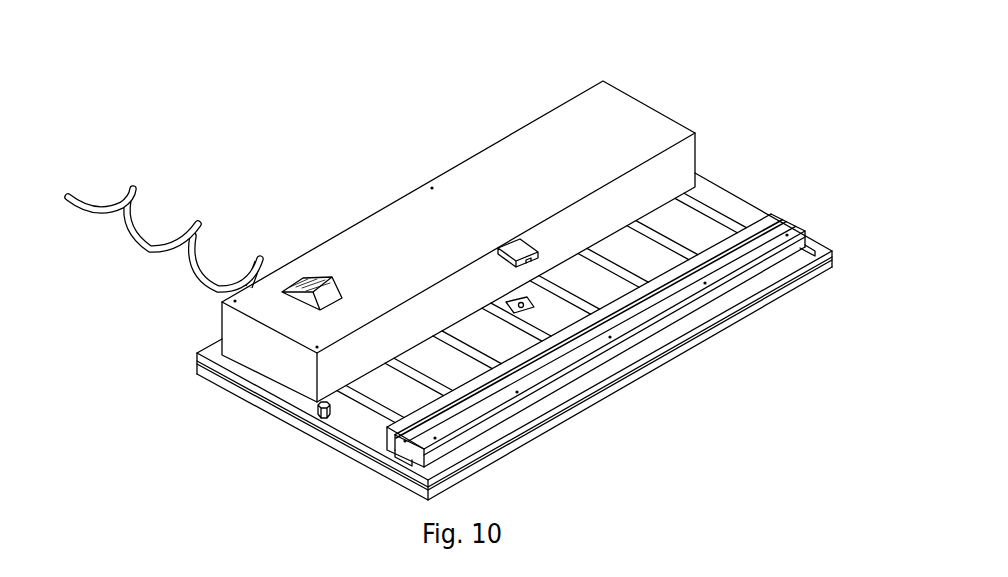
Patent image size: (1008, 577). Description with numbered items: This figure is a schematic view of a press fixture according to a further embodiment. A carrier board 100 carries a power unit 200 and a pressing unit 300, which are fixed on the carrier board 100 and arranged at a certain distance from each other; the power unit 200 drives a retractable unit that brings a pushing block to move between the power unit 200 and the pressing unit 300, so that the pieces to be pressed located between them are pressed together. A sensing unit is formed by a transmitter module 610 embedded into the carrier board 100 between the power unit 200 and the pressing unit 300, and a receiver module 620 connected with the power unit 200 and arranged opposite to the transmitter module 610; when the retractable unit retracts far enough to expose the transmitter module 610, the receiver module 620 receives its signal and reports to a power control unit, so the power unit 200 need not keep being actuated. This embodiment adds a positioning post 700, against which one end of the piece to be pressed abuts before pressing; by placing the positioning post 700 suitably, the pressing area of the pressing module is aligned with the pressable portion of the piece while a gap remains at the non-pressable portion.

The carrier board 100 is at (730, 207).
The power unit 200 is at (614, 149).
The pressing unit 300 is at (772, 236).
The transmitter module 610 is at (512, 303).
The receiver module 620 is at (512, 248).
The positioning post 700 is at (318, 406).